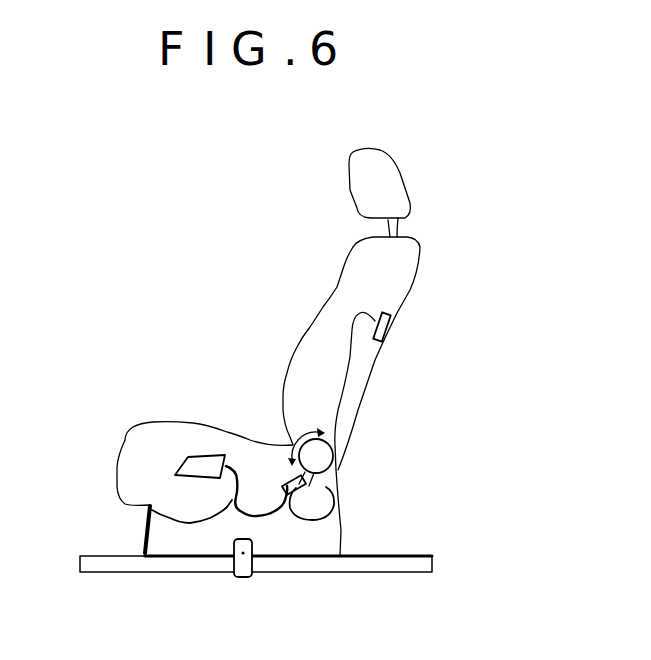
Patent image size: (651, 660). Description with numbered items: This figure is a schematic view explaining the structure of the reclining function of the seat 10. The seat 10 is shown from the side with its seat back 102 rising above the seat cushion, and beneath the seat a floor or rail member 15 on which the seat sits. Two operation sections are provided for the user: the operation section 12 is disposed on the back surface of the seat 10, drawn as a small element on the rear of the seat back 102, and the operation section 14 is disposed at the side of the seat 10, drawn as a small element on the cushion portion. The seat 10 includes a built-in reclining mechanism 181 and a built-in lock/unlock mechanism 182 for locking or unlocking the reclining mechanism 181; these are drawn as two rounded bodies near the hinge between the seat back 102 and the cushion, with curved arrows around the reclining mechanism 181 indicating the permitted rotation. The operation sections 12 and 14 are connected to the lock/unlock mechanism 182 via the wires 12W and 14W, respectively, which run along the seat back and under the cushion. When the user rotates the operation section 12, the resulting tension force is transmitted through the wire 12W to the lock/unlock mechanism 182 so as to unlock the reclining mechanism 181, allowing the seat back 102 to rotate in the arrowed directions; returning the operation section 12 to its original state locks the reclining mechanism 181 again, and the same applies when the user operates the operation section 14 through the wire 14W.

The seat 10 is at (392, 134).
The seat back 102 is at (313, 340).
The operation section 12 is at (390, 318).
The wire 12W is at (355, 375).
The operation section 14 is at (188, 457).
The wire 14W is at (148, 513).
The reclining mechanism 181 is at (338, 462).
The lock/unlock mechanism 182 is at (340, 500).
The floor 15 is at (409, 573).